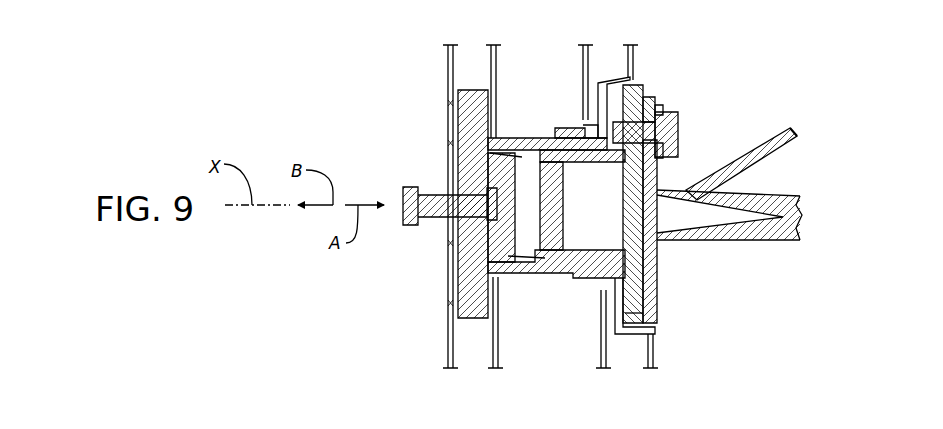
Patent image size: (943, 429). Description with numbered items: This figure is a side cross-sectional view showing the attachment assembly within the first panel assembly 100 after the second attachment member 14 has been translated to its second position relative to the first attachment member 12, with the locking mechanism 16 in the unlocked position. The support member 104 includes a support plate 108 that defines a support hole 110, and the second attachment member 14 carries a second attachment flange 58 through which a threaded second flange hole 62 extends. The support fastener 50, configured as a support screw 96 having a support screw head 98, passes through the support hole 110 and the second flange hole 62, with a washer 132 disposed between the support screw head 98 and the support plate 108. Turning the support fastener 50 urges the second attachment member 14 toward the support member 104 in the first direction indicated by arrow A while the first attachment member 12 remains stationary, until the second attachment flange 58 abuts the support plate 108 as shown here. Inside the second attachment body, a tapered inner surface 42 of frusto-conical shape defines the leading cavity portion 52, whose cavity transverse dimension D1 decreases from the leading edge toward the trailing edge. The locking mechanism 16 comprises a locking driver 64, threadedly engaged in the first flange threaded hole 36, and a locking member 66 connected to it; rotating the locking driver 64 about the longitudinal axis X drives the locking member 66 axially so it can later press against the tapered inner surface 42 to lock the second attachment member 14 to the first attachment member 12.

The first panel assembly 100 is at (440, 72).
The first attachment member 12 is at (508, 137).
The first flange threaded hole 36 is at (470, 195).
The locking driver 64 is at (405, 190).
The locking mechanism 16 is at (406, 232).
The locking member 66 is at (497, 240).
The leading cavity portion 52 is at (540, 152).
The cavity transverse dimension D1 is at (530, 169).
The tapered inner surface 42 is at (523, 256).
The second flange hole 62 is at (622, 120).
The support plate 108 is at (655, 288).
The support fastener 50 is at (682, 125).
The support screw 96 is at (682, 135).
The support hole 110 is at (647, 98).
The washer 132 is at (665, 108).
The support member 104 is at (779, 126).
The support screw head 98 is at (673, 142).
The second attachment flange 58 is at (640, 316).
The second attachment member 14 is at (642, 337).